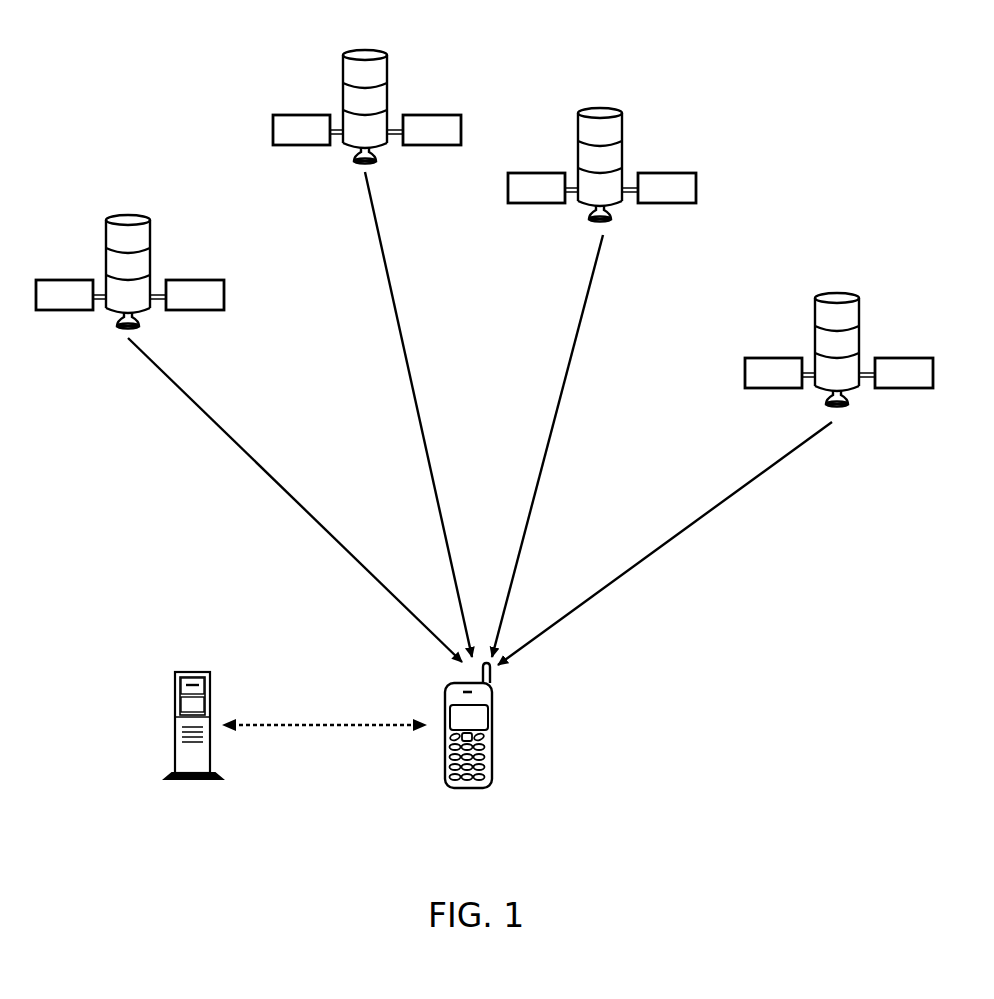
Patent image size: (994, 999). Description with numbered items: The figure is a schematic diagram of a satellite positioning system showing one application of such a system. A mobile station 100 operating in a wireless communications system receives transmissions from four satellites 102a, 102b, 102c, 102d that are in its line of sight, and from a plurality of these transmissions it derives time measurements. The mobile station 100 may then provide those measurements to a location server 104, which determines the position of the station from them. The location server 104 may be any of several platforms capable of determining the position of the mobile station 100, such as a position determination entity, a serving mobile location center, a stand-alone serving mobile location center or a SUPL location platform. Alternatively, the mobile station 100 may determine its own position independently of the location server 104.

The mobile station 100 is at (475, 789).
The satellite 102a is at (128, 219).
The satellite 102b is at (365, 54).
The satellite 102c is at (600, 112).
The satellite 102d is at (837, 297).
The location server 104 is at (192, 671).